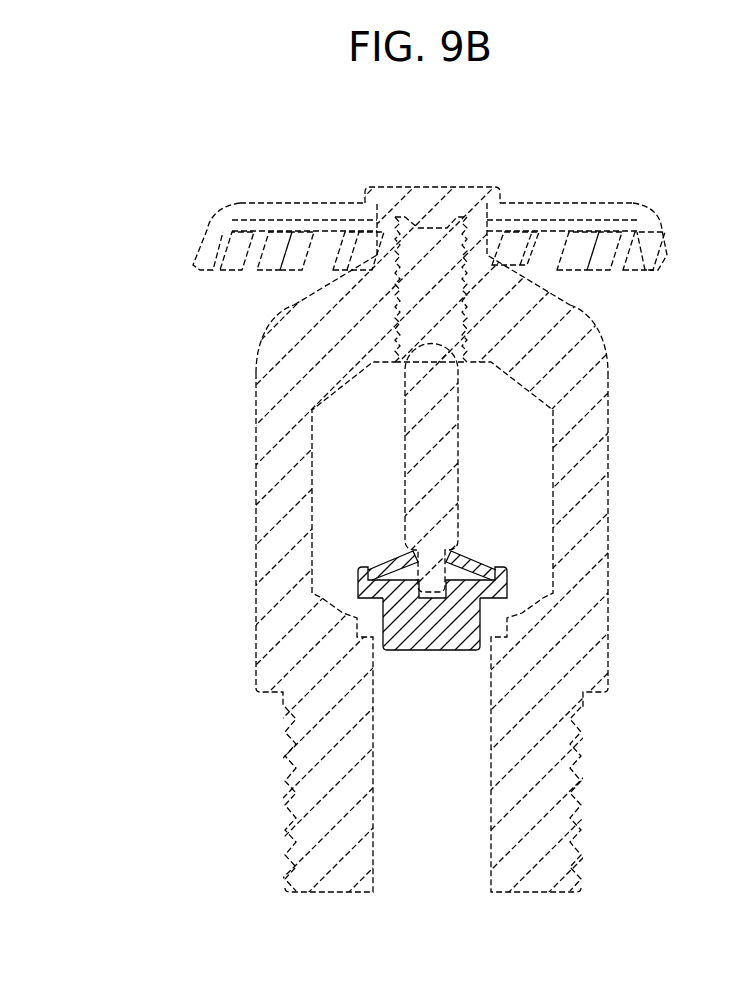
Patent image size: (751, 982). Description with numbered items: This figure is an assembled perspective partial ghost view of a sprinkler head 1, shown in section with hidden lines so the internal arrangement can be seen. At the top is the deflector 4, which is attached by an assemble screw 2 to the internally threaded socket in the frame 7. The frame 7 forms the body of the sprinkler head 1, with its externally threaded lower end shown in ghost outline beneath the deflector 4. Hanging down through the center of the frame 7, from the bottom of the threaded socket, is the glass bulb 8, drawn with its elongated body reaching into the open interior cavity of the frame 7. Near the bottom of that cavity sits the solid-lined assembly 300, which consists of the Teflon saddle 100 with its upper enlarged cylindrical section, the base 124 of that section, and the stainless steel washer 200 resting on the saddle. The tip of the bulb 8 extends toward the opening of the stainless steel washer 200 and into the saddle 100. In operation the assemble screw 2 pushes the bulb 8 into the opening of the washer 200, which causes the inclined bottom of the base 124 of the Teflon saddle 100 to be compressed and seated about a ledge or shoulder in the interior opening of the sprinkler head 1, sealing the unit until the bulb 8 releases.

The sprinkler head 1 is at (375, 518).
The assemble screw 2 is at (442, 303).
The deflector 4 is at (576, 207).
The frame 7 is at (575, 517).
The glass bulb 8 is at (418, 410).
The Teflon saddle 100 is at (428, 637).
The base 124 is at (362, 585).
The stainless steel washer 200 is at (468, 558).
The trigger assembly 300 is at (377, 540).